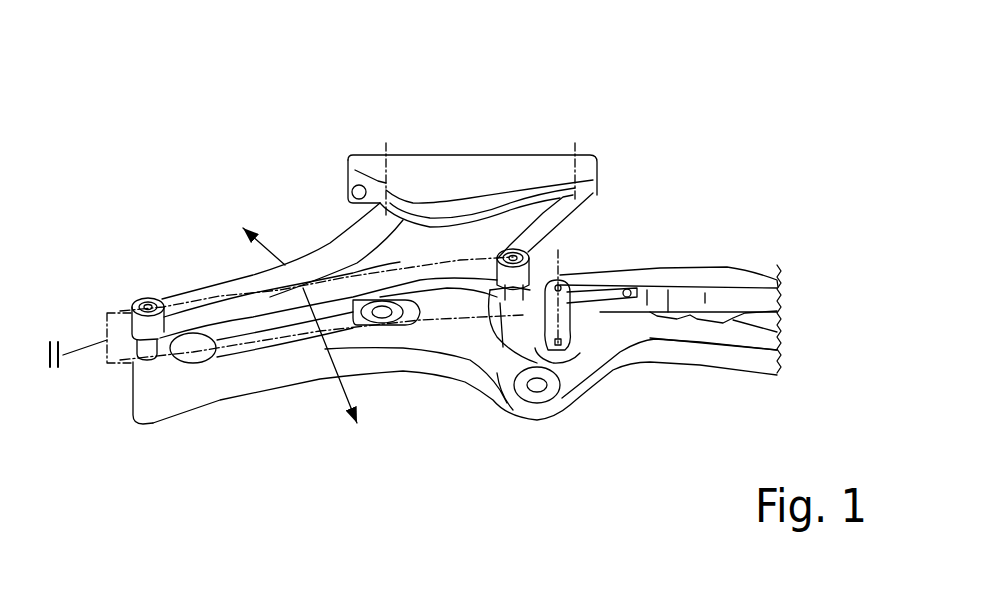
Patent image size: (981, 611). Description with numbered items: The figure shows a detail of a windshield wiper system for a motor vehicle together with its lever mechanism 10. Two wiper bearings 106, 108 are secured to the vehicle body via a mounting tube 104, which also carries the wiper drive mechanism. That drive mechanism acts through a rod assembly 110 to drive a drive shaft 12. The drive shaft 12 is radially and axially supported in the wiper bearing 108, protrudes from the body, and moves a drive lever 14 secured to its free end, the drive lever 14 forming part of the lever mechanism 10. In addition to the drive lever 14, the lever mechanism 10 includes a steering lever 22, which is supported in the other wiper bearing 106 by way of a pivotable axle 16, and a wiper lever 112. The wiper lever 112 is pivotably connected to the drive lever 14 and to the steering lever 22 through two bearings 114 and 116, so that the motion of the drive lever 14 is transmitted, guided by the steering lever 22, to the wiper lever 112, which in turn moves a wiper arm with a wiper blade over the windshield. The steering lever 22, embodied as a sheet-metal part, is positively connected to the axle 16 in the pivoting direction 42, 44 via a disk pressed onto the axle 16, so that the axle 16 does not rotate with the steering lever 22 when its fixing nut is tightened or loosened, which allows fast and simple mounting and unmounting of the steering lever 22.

The lever mechanism 10 is at (290, 222).
The drive shaft 12 is at (522, 293).
The drive lever 14 is at (533, 246).
The axle 16 is at (143, 343).
The steering lever 22 is at (180, 295).
The pivoting direction 42 is at (264, 247).
The pivoting direction 44 is at (338, 363).
The mounting tube 104 is at (210, 388).
The wiper bearing 106 is at (145, 395).
The wiper bearing 108 is at (496, 380).
The rod assembly 110 is at (683, 300).
The wiper lever 112 is at (530, 167).
The bearing 114 is at (346, 172).
The bearing 116 is at (593, 180).